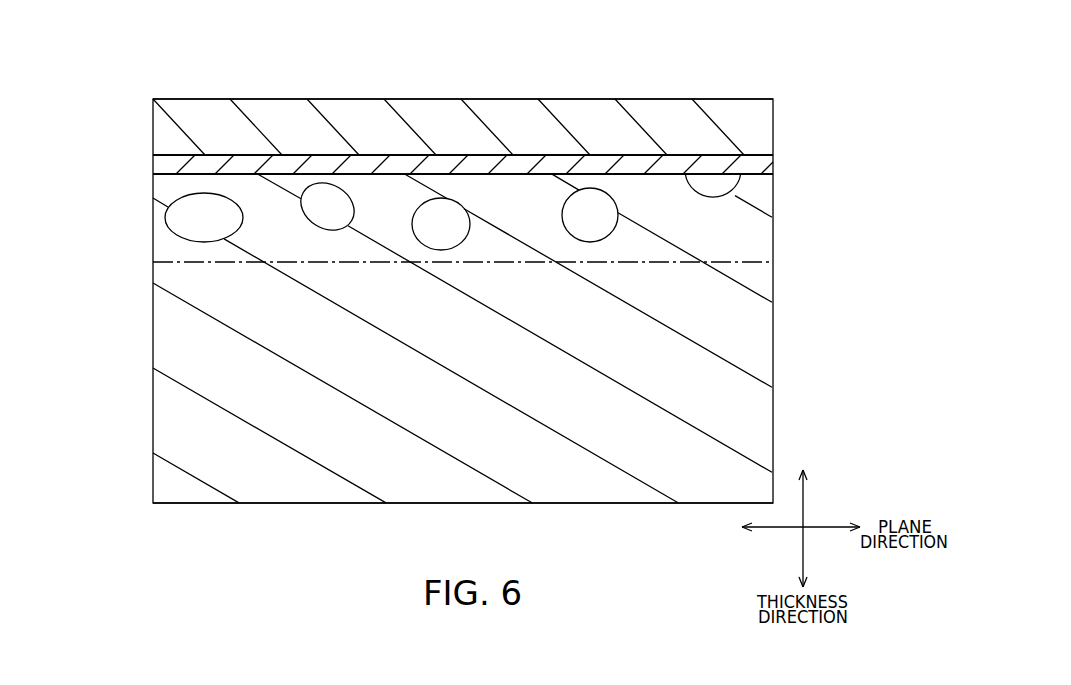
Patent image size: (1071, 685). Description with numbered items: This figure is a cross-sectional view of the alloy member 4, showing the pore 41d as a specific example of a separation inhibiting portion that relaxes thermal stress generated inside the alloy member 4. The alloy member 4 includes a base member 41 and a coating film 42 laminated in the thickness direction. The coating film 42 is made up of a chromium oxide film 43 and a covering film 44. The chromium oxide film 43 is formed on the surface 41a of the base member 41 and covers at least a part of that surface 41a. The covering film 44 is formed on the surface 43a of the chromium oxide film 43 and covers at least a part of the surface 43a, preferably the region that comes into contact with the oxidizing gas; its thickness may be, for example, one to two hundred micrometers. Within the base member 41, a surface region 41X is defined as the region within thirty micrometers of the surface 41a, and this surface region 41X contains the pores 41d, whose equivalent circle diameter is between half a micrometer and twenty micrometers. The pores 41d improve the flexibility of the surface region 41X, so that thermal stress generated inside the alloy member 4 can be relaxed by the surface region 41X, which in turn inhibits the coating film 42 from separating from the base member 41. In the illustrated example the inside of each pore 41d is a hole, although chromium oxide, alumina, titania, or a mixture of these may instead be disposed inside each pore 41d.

The alloy member 4 is at (788, 62).
The base member 41 is at (770, 330).
The surface region 41X is at (147, 177).
The surface of the base member 41a is at (182, 172).
The pore 41d is at (168, 223).
The coating film 42 is at (883, 103).
The chromium oxide film 43 is at (770, 160).
The surface of the chromium oxide film 43a is at (197, 152).
The covering film 44 is at (770, 115).